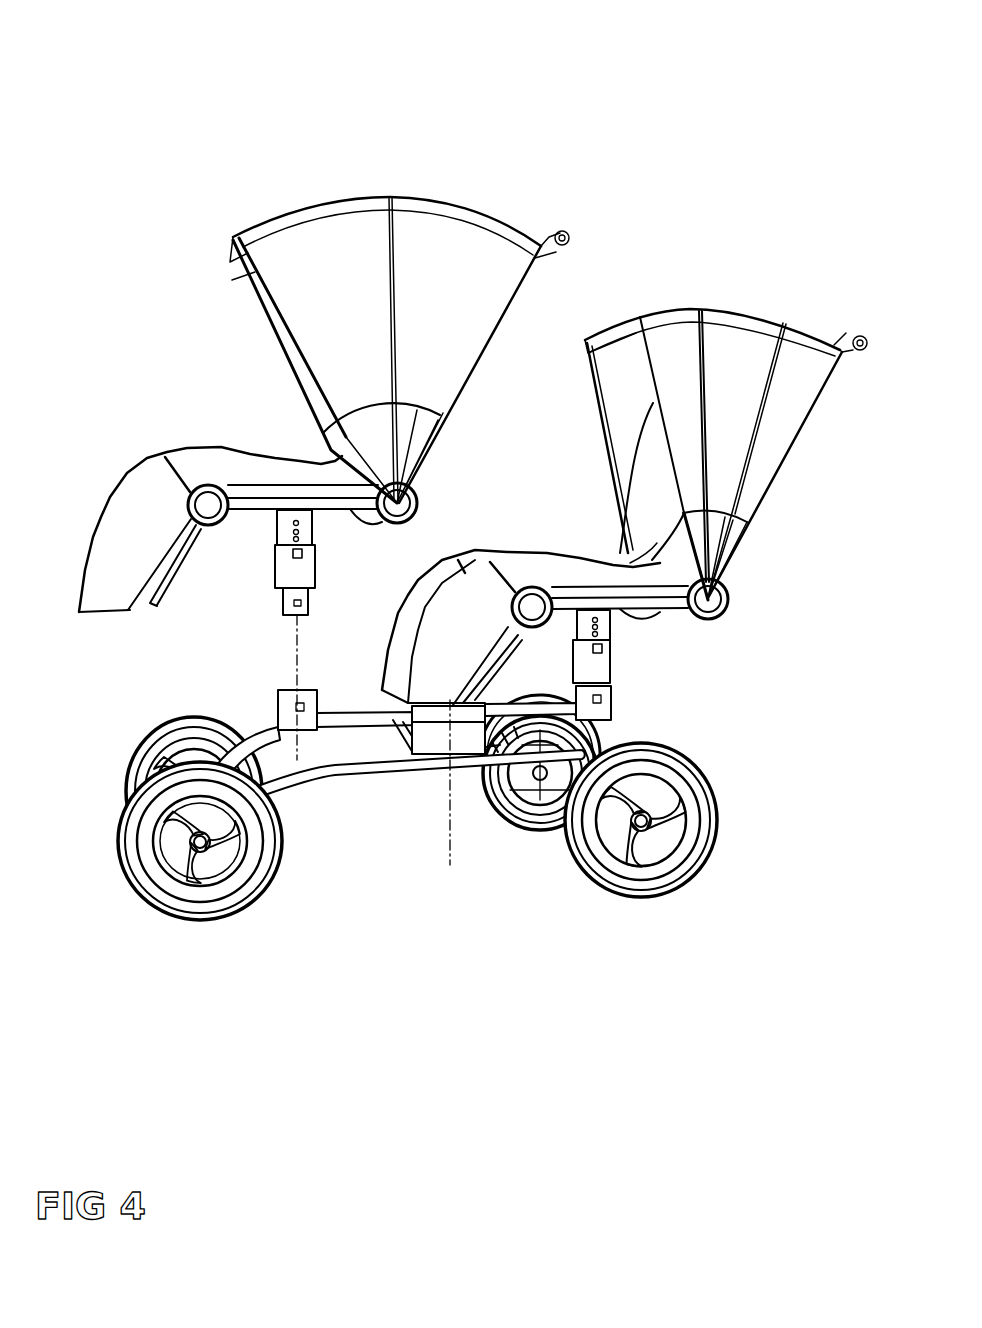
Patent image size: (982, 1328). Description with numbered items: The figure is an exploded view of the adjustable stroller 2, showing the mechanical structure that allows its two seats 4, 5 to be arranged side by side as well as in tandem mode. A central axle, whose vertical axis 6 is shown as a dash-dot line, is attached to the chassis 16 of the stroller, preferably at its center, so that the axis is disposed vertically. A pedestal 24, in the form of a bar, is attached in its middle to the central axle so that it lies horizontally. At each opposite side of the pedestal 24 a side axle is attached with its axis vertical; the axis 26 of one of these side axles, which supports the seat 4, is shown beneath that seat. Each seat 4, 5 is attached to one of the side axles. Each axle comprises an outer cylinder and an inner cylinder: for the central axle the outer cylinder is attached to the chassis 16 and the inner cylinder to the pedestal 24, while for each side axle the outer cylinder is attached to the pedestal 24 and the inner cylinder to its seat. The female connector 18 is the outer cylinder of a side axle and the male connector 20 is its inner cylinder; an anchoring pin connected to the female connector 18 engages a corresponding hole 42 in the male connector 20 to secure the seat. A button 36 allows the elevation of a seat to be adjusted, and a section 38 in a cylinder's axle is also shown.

The adjustable stroller 2 is at (492, 119).
The seat 4 is at (247, 429).
The seat 5 is at (552, 521).
The axis of central axle 6 is at (452, 808).
The chassis 16 is at (380, 767).
The female connector 18 is at (278, 702).
The male connector 20 is at (315, 580).
The pedestal 24 is at (362, 712).
The axis of side axle 26 is at (297, 650).
The button for adjusting seat elevation 36 is at (293, 555).
The section in cylinder's axle 38 is at (277, 530).
The hole 42 is at (312, 530).